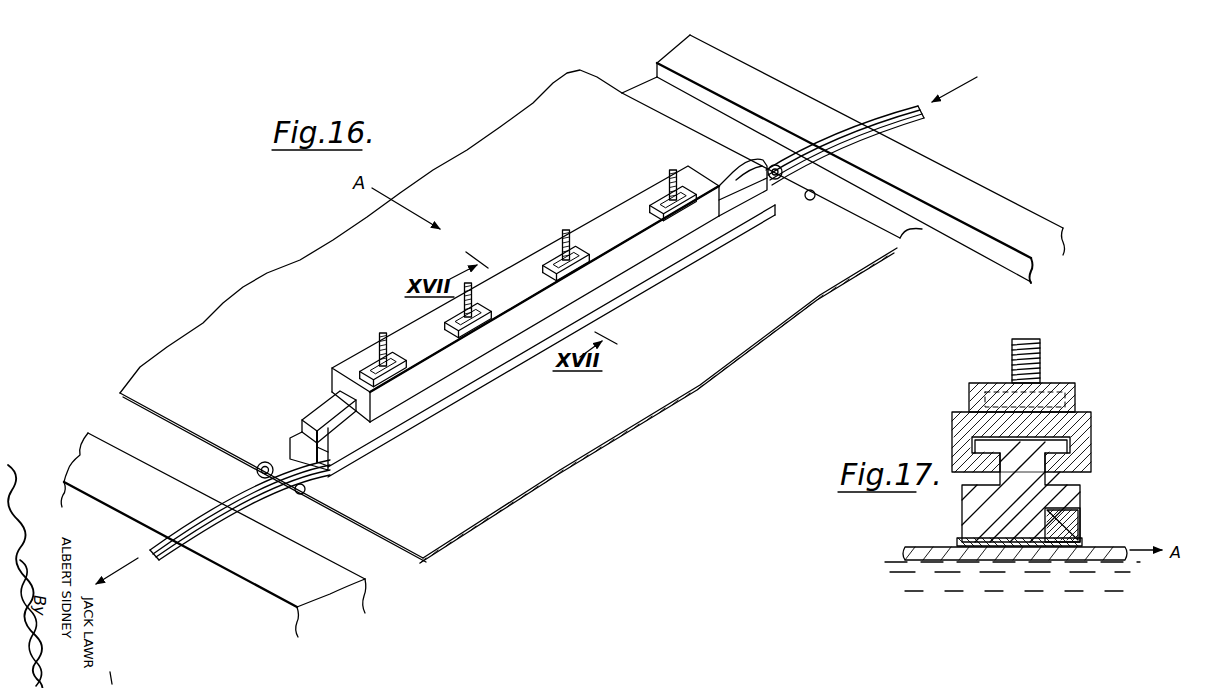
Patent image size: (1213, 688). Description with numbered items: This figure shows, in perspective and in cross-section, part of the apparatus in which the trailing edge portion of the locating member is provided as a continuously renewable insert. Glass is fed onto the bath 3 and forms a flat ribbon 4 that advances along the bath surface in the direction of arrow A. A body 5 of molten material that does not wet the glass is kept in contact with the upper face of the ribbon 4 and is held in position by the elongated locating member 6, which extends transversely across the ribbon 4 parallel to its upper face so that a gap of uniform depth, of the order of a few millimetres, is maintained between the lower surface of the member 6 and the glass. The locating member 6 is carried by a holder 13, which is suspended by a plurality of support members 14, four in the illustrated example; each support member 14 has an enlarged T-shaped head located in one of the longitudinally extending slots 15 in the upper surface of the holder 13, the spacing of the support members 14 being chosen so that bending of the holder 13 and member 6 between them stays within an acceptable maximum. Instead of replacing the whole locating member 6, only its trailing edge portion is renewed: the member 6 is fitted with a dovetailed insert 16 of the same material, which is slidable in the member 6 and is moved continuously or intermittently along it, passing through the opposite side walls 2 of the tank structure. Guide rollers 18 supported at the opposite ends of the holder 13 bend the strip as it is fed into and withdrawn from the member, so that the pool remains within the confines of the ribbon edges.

In FIG. 16, the side walls 2 is at (244, 572).
In FIG. 16, the bath 3 is at (332, 538).
In FIG. 17, the bath 3 is at (1012, 578).
In FIG. 16, the ribbon 4 is at (521, 316).
In FIG. 17, the ribbon 4 is at (908, 550).
In FIG. 17, the body of molten material 5 is at (962, 542).
In FIG. 16, the locating member 6 is at (330, 401).
In FIG. 17, the locating member 6 is at (973, 508).
In FIG. 16, the holder 13 is at (610, 216).
In FIG. 17, the holder 13 is at (1093, 432).
In FIG. 16, the support members 14 is at (383, 338).
In FIG. 17, the support members 14 is at (1043, 360).
In FIG. 16, the slots 15 is at (389, 374).
In FIG. 16, the insert 16 is at (317, 476).
In FIG. 17, the insert 16 is at (1079, 524).
In FIG. 16, the guide rollers 18 is at (263, 467).